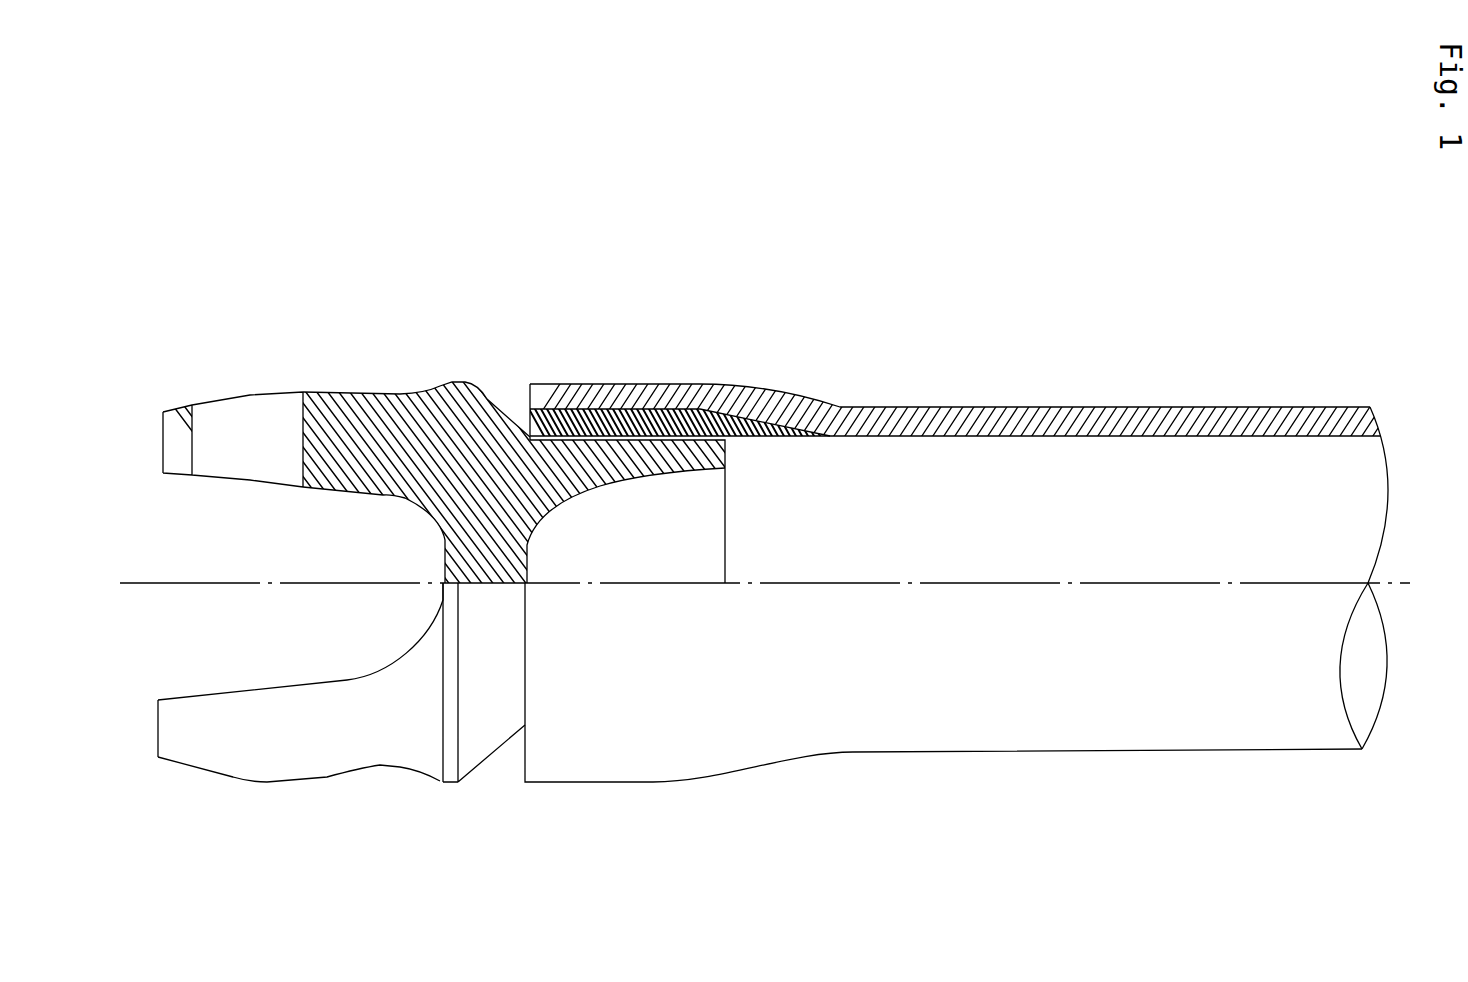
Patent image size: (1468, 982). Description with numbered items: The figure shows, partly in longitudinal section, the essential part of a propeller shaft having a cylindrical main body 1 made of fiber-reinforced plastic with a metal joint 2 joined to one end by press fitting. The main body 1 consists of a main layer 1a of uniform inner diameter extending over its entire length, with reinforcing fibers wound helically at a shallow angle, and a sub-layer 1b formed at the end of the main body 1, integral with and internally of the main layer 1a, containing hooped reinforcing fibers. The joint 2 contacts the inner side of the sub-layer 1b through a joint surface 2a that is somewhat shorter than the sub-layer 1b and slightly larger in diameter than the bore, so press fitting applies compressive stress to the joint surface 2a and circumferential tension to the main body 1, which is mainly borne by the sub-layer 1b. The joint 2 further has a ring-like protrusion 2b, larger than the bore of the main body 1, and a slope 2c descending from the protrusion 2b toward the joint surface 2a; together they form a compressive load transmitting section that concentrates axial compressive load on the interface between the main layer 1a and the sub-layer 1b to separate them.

The main body 1 is at (968, 578).
The main layer 1a is at (1035, 408).
The sub-layer 1b is at (677, 346).
The joint 2 is at (516, 575).
The joint surface 2a is at (647, 421).
The ring-like protrusion 2b is at (453, 383).
The slope 2c is at (492, 403).